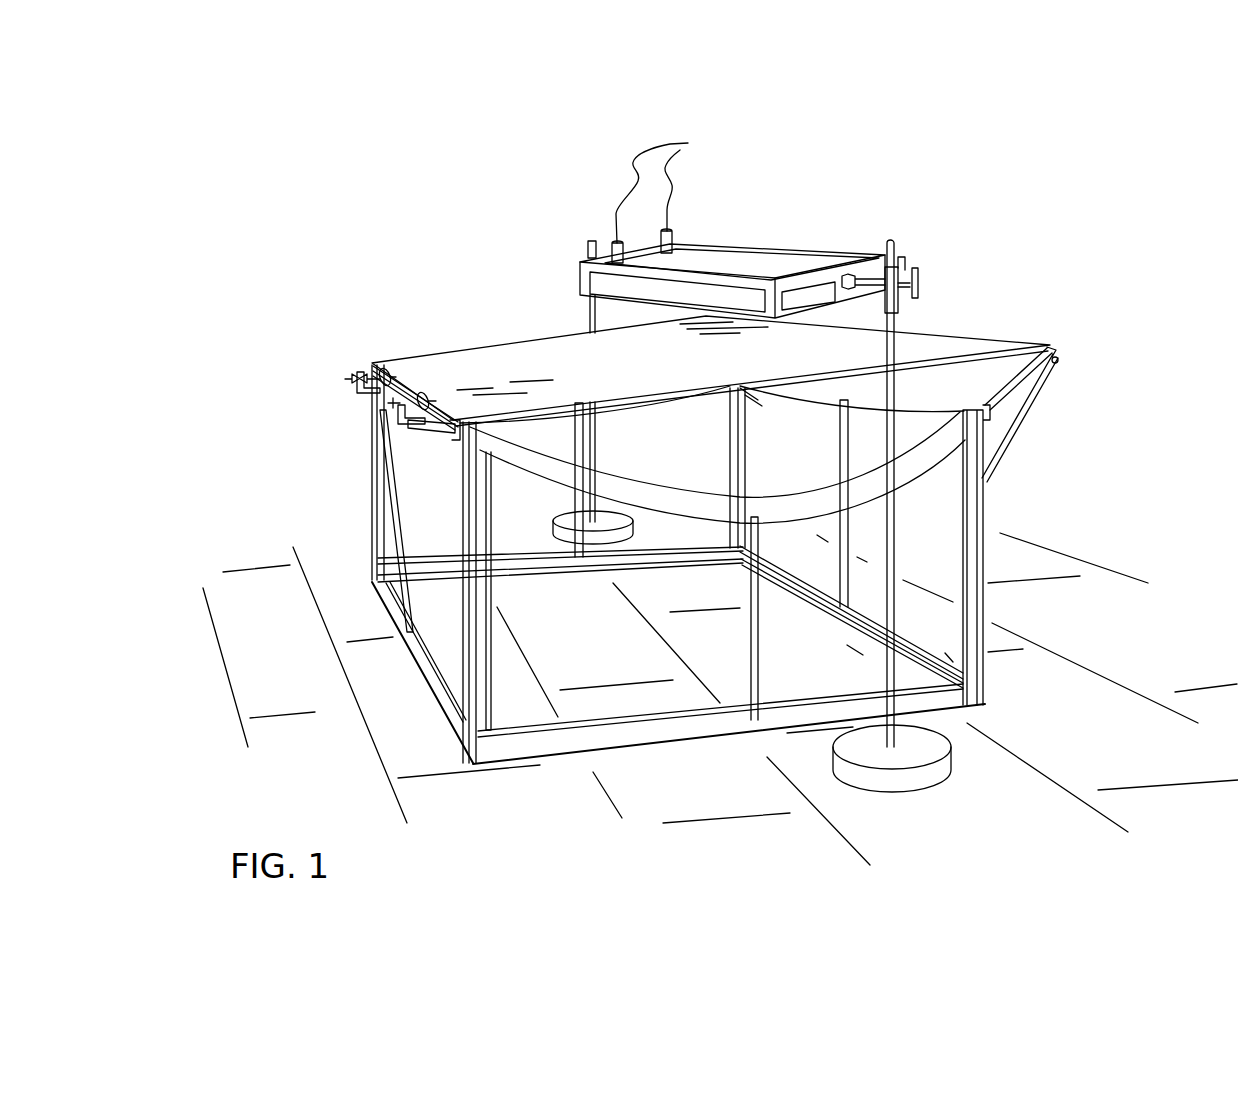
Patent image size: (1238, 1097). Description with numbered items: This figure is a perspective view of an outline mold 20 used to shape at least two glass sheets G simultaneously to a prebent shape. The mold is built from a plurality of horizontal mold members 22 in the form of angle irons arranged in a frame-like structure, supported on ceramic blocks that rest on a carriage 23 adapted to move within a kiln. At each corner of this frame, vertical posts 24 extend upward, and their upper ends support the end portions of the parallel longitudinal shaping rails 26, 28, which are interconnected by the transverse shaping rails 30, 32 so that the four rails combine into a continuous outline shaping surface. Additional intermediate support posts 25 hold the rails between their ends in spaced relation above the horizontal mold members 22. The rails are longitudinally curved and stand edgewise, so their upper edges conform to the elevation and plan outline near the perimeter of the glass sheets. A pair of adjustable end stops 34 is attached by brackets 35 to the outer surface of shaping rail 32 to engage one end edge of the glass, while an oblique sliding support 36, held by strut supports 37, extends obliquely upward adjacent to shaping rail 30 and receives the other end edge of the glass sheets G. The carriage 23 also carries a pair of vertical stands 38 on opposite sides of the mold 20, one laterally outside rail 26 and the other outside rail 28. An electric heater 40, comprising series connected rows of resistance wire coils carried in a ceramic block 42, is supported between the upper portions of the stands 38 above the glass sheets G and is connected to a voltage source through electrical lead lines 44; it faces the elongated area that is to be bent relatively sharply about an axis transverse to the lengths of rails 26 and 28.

The outline mold 20 is at (715, 587).
The horizontal mold members 22 is at (421, 670).
The carriage 23 is at (224, 684).
The vertical posts 24 is at (983, 523).
The intermediate support posts 25 is at (403, 522).
The longitudinal shaping rail 26 is at (675, 522).
The longitudinal shaping rail 28 is at (629, 410).
The transverse shaping rail 30 is at (877, 416).
The transverse shaping rail 32 is at (411, 429).
The adjustable end stops 34 is at (425, 393).
The brackets 35 is at (352, 385).
The oblique sliding support 36 is at (988, 382).
The strut supports 37 is at (1010, 436).
The vertical stands 38 is at (590, 308).
The electric heater 40 is at (751, 219).
The ceramic block 42 is at (828, 247).
The electrical lead lines 44 is at (726, 262).
The glass sheets G is at (947, 332).